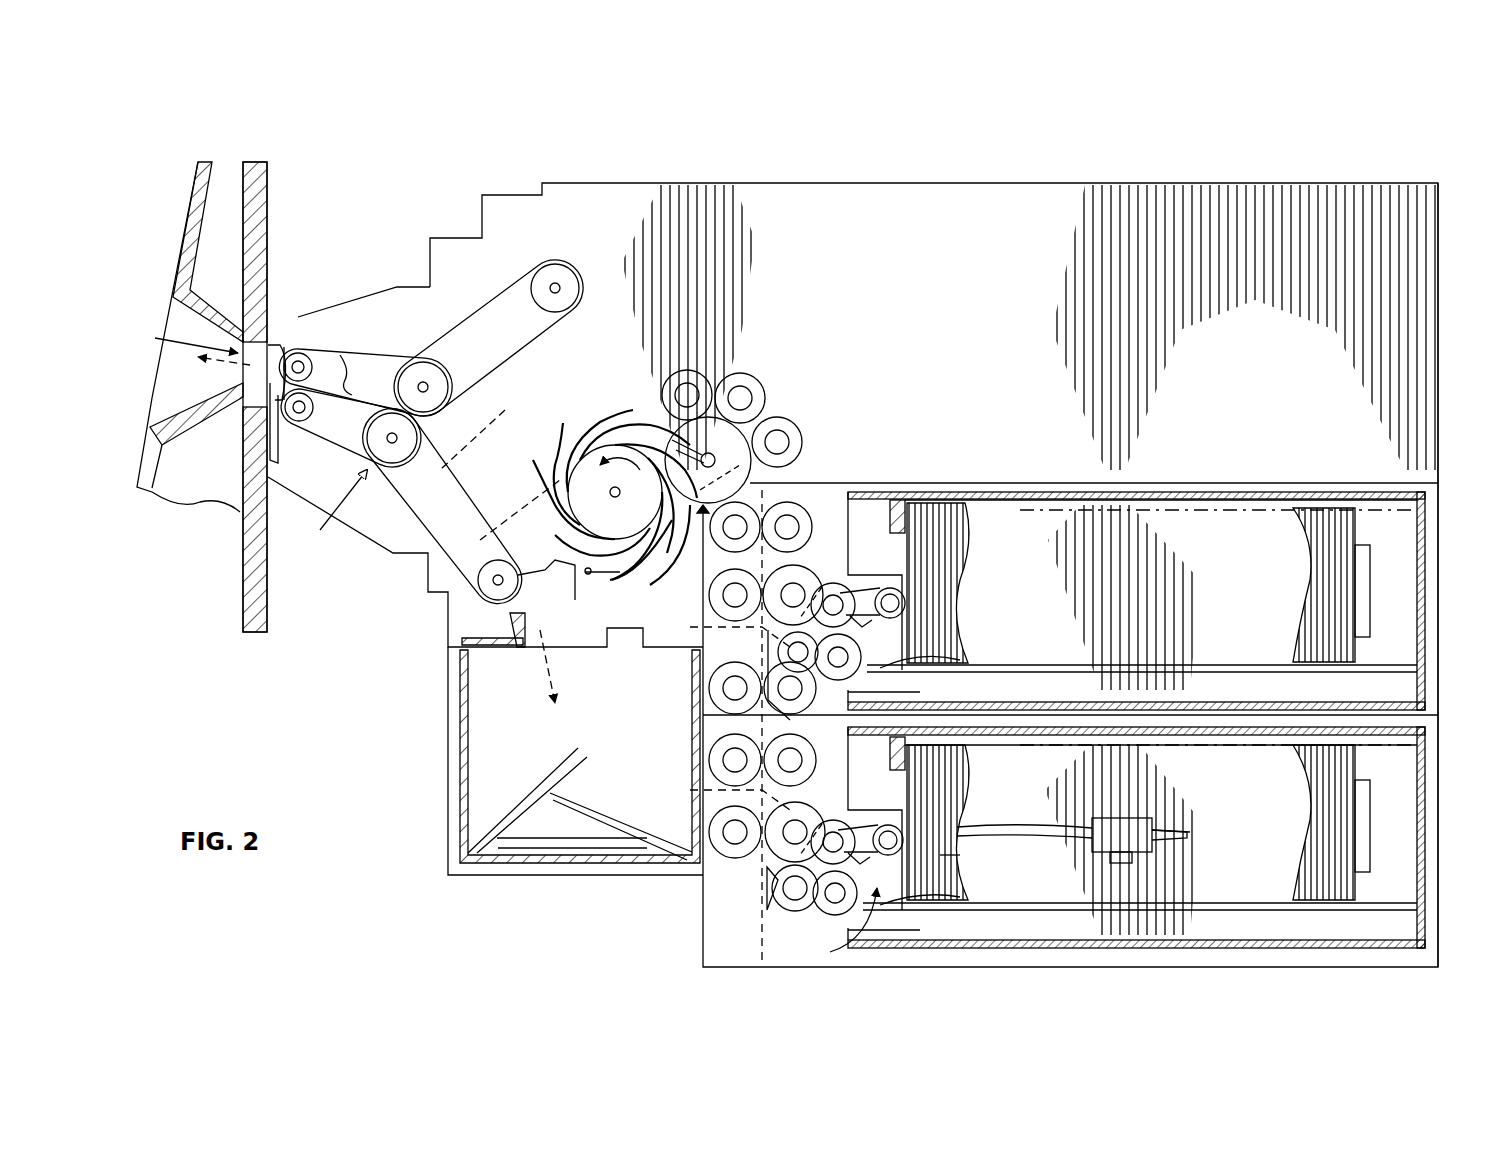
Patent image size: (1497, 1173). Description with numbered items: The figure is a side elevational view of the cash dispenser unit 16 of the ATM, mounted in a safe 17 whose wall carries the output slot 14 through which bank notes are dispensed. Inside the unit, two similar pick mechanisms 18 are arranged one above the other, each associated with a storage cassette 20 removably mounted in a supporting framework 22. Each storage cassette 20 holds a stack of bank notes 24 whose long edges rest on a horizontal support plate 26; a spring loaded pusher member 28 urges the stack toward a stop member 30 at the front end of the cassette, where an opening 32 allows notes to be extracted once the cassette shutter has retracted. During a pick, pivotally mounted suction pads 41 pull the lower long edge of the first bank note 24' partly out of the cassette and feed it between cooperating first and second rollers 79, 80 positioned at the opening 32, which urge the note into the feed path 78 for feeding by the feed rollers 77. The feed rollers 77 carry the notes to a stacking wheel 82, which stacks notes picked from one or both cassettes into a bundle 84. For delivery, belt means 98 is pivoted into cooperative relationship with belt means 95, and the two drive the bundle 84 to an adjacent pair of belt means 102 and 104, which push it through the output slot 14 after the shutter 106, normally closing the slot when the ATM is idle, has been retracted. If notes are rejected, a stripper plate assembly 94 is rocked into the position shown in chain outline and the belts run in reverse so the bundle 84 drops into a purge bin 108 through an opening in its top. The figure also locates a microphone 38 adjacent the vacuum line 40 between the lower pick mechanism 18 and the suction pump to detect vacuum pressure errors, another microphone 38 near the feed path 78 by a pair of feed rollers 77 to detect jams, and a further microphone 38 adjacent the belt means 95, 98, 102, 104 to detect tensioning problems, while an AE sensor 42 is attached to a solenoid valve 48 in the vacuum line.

The output slot 14 is at (189, 337).
The cash dispenser unit 16 is at (838, 183).
The safe 17 is at (268, 194).
The pick mechanism 18 is at (872, 590).
The storage cassette 20 is at (1167, 485).
The supporting framework 22 is at (1440, 435).
The stack of bank notes 24 is at (1131, 701).
The first bank note 24' is at (948, 766).
The horizontal support plate 26 is at (1200, 665).
The spring loaded pusher member 28 is at (1362, 568).
The stop member 30 is at (900, 500).
The opening 32 is at (840, 926).
The microphone 38 is at (1040, 815).
The vacuum line 40 is at (1188, 832).
The suction pad 41 is at (958, 855).
The AE sensor 42 is at (1130, 858).
The solenoid valve 48 is at (1100, 818).
The feed rollers 77 is at (780, 428).
The feed path 78 is at (690, 626).
The first roller 79 is at (838, 677).
The second roller 80 is at (836, 583).
The stacking wheel 82 is at (637, 395).
The bundle of notes 84 is at (489, 434).
The stripper plate assembly 94 is at (520, 570).
The belt means 95 is at (418, 492).
The belt means 98 is at (500, 290).
The belt means 102 is at (345, 448).
The belt means 104 is at (365, 352).
The shutter 106 is at (285, 340).
The purge bin 108 is at (460, 714).